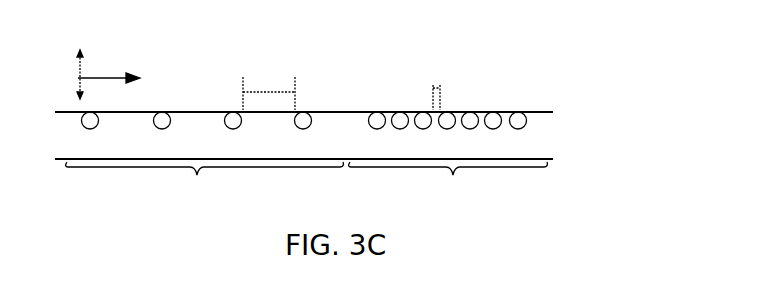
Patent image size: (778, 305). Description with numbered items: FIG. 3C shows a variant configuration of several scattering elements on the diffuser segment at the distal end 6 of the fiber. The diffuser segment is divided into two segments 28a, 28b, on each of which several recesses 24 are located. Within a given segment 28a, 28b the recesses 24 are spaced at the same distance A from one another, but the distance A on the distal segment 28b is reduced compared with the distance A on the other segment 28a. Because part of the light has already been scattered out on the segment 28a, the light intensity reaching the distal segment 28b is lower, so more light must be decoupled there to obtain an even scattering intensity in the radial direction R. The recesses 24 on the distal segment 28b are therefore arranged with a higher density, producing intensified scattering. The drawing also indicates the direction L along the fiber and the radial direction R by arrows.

The distal end 6 is at (627, 129).
The recesses 24 is at (164, 114).
The segment 28a is at (197, 176).
The distal segment 28b is at (453, 176).
The distance A is at (270, 92).
The radial direction R is at (79, 77).
The direction L is at (99, 78).